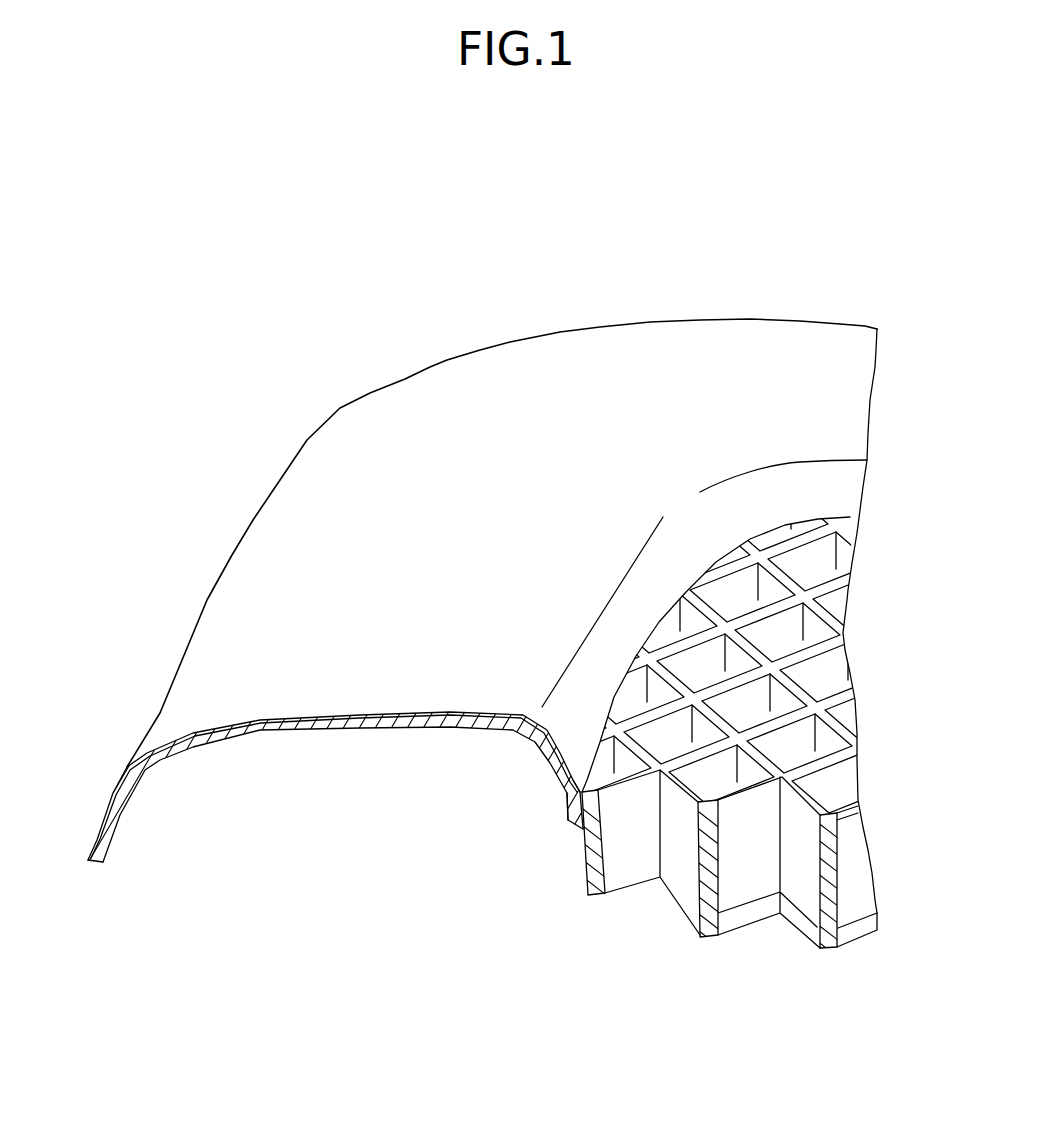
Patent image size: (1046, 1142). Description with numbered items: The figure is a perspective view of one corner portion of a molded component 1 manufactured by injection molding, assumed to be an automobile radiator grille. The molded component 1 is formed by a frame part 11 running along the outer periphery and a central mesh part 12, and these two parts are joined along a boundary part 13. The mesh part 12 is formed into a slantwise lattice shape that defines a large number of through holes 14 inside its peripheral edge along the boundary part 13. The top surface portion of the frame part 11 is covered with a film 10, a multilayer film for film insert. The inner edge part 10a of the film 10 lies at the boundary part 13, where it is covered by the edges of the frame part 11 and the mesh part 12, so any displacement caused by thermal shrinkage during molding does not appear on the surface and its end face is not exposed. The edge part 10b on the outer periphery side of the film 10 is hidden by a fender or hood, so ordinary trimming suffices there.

The molded component 1 is at (252, 412).
The film 10 is at (212, 638).
The edge part of the film 10a is at (568, 806).
The edge part on the outer periphery side of the film 10b is at (85, 866).
The frame part 11 is at (305, 727).
The mesh part 12 is at (865, 778).
The boundary part 13 is at (660, 624).
The through holes 14 is at (833, 673).